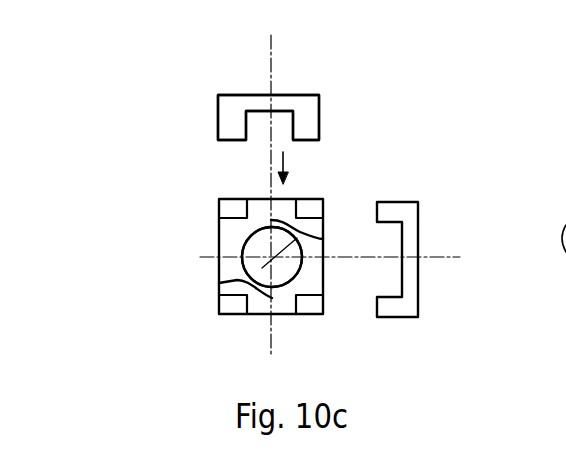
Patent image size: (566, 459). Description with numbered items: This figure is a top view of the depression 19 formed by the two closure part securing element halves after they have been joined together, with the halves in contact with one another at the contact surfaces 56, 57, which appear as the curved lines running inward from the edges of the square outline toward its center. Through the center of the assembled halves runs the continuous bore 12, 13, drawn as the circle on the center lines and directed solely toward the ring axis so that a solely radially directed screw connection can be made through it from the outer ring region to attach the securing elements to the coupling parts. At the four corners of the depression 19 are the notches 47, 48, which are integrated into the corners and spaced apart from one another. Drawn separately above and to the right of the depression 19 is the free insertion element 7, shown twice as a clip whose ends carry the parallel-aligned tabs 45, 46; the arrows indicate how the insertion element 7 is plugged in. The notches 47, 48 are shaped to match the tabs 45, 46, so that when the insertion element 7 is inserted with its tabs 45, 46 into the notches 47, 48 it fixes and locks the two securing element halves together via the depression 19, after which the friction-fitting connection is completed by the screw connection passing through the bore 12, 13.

The insertion element 7 is at (304, 113).
The continuous bore 12 is at (246, 263).
The continuous bore 13 is at (272, 257).
The depression 19 is at (240, 333).
The tab 45 is at (232, 127).
The tab 46 is at (319, 138).
The notch 47 is at (238, 210).
The notch 48 is at (308, 212).
The contact surface 56 is at (219, 283).
The contact surface 57 is at (323, 239).